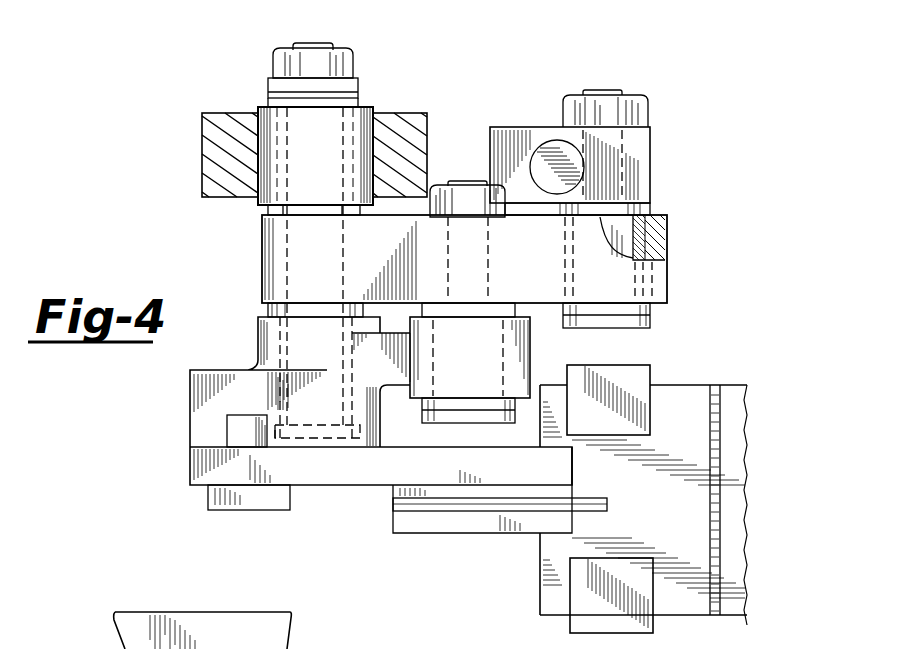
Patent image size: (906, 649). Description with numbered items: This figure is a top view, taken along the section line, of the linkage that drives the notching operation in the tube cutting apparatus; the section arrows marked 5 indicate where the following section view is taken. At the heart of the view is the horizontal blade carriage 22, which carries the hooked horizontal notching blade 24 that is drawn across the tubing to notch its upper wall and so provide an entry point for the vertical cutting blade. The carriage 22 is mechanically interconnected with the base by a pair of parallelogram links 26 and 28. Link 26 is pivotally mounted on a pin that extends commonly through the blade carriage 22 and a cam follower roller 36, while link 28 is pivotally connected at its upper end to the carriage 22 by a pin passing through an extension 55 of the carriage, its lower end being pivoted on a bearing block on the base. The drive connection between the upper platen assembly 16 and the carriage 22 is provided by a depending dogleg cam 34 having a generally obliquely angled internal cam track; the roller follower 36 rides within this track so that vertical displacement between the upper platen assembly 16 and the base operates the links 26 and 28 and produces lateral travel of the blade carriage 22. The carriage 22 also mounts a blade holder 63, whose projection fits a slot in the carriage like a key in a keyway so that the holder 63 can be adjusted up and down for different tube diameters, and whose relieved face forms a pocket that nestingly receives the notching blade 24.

The section line 5- 5 is at (165, 8).
The upper platen assembly 16 is at (303, 648).
The horizontal blade carriage 22 is at (190, 402).
The horizontal notching blade 24 is at (594, 515).
The parallelogram link 26 is at (262, 237).
The parallelogram link 28 is at (648, 280).
The dogleg cam 34 is at (203, 148).
The cam follower roller 36 is at (372, 110).
The extension 55 is at (520, 357).
The blade holder 63 is at (368, 477).